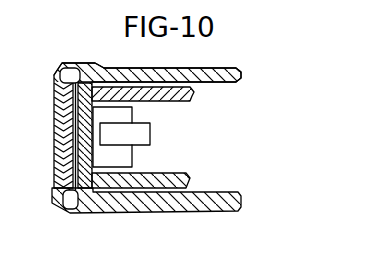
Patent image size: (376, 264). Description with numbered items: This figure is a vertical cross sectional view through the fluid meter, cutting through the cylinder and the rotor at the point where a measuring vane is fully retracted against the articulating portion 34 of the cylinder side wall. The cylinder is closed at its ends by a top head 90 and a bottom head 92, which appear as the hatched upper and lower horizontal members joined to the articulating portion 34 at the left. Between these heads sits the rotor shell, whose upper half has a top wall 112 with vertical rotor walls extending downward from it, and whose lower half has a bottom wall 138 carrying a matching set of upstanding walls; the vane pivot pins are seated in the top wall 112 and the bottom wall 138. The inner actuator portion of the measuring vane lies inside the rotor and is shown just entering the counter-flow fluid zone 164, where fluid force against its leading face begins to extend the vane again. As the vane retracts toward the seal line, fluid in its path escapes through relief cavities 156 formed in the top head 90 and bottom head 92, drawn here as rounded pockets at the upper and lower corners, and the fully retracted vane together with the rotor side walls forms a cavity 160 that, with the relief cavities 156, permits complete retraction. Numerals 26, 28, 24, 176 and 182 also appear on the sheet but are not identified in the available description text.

The articulating portion 34 is at (54, 95).
The top head 90 is at (177, 67).
The bottom head 92 is at (186, 200).
The top wall 112 is at (193, 95).
The bottom wall 138 is at (188, 180).
The relief cavity 156 is at (77, 70).
The cavity 160 is at (76, 154).
The counter-flow fluid zone 164 is at (167, 138).
The edge member 26 is at (9, 183).
The edge member 28 is at (9, 205).
The edge member 24 is at (9, 243).
The element 176 is at (129, 253).
The element 182 is at (178, 253).